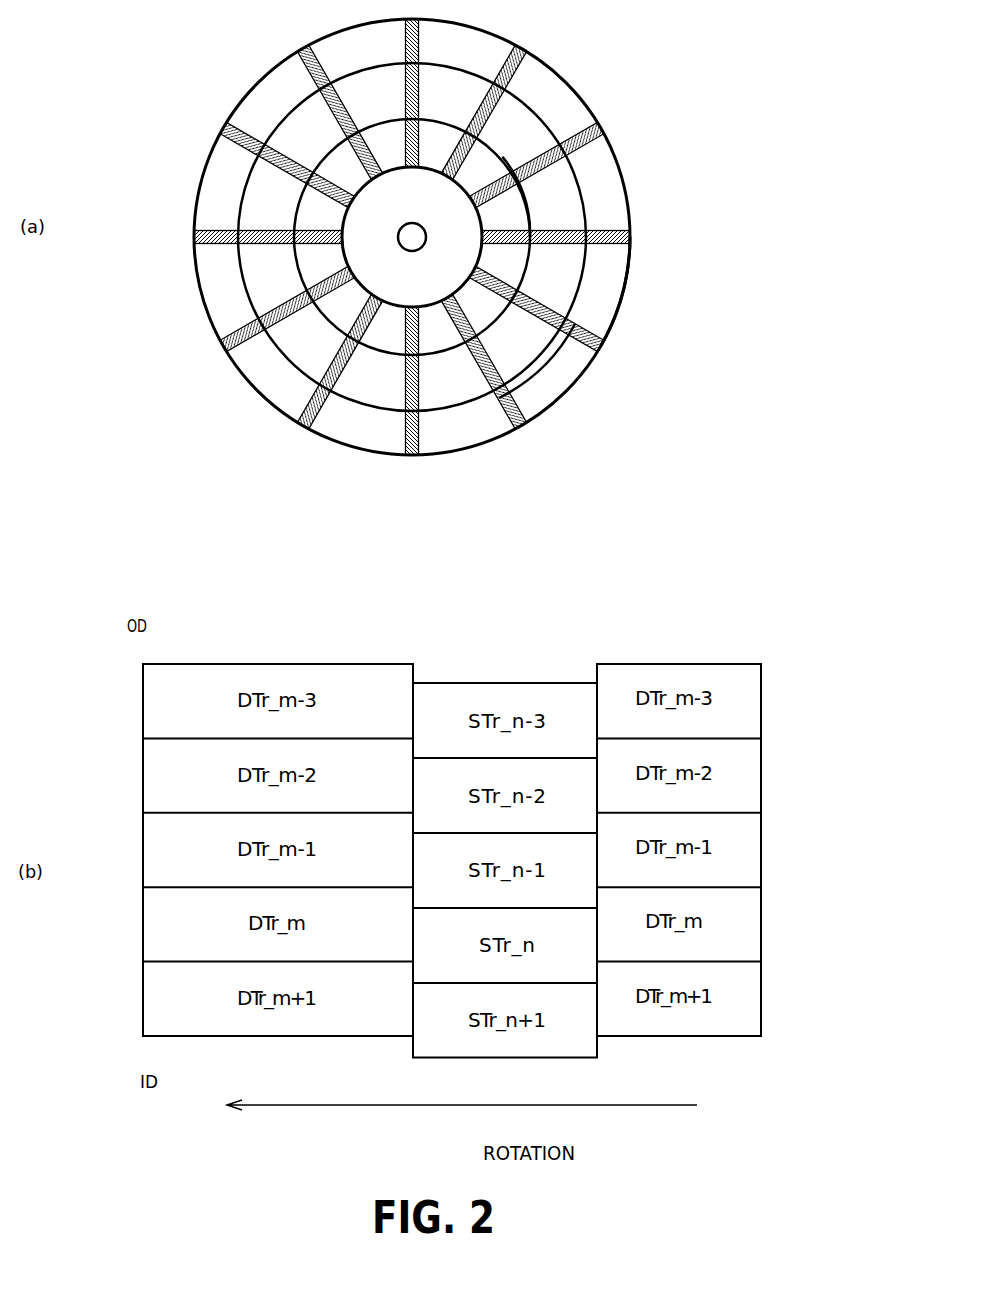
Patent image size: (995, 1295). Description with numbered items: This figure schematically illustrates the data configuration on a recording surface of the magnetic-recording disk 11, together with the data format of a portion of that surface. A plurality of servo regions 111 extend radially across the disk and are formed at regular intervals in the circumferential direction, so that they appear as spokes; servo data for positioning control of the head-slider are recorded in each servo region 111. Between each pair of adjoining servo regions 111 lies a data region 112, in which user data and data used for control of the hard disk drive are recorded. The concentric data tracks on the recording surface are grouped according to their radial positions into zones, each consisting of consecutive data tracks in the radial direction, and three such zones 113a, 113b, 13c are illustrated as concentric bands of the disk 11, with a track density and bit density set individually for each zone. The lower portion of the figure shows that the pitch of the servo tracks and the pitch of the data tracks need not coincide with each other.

The magnetic-recording disk 11 is at (195, 202).
The servo region 111 is at (610, 126).
The data region 112 is at (550, 97).
The zone 13c is at (510, 215).
The zone 113a is at (607, 285).
The zone 113b is at (520, 346).